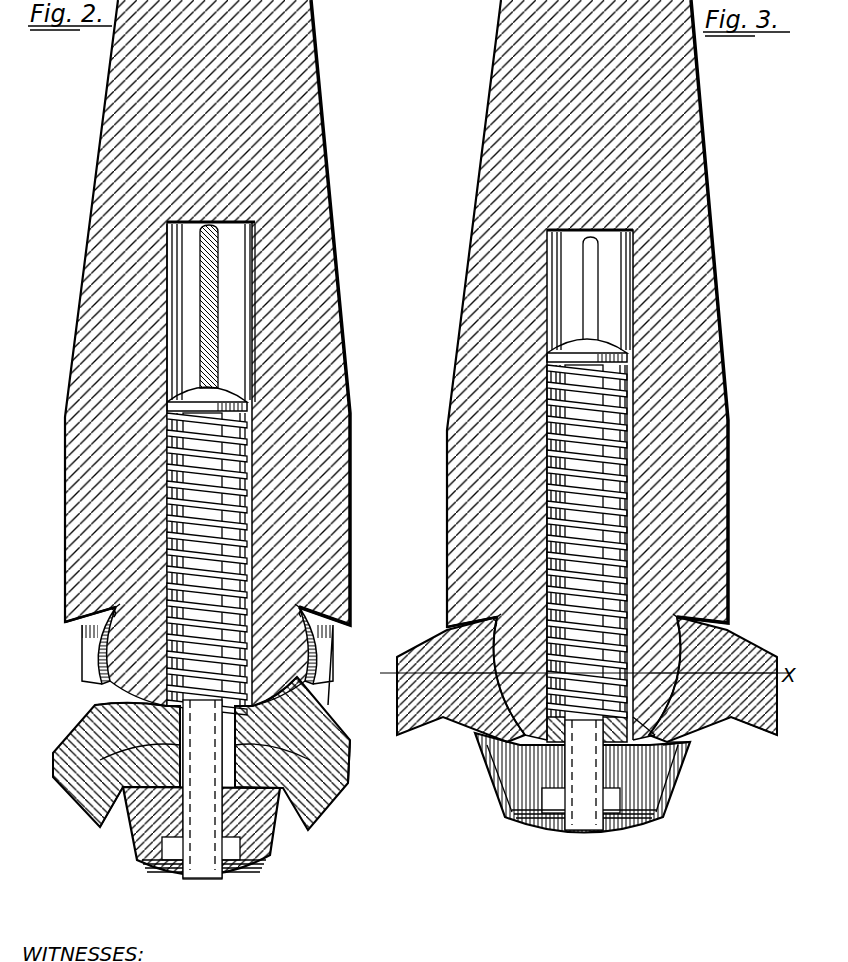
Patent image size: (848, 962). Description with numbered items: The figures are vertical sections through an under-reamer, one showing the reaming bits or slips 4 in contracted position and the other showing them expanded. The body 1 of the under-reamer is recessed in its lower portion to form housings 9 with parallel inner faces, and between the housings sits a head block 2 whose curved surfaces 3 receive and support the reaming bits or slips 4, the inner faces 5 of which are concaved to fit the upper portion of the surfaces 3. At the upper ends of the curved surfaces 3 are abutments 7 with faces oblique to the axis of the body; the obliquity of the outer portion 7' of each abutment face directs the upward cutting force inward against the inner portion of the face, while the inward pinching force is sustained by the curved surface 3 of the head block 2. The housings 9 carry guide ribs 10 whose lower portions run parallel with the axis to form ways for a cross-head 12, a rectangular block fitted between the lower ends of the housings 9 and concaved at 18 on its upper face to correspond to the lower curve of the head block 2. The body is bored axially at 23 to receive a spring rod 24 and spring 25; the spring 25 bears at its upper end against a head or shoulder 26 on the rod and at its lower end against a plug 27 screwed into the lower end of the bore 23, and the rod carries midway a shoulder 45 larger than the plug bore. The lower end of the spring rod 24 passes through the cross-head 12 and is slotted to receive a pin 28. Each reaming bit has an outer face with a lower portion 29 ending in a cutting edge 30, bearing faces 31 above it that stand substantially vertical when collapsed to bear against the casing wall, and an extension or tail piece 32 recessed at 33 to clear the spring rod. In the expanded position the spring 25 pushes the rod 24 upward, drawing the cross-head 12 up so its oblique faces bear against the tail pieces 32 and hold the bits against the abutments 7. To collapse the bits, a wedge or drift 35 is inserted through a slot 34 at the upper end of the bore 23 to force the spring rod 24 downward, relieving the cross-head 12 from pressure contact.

In FIG. 2, the body 1 is at (325, 377).
In FIG. 2, the head block 2 is at (305, 650).
In FIG. 3, the head block 2 is at (728, 620).
In FIG. 2, the curved surfaces 3 is at (93, 650).
In FIG. 2, the reaming bits or slips 4 is at (75, 758).
In FIG. 3, the reaming bits or slips 4 is at (443, 695).
In FIG. 2, the inner faces 5 is at (110, 782).
In FIG. 3, the inner faces 5 is at (608, 676).
In FIG. 2, the abutments 7 is at (198, 619).
In FIG. 3, the abutments 7 is at (597, 605).
In FIG. 2, the outer portion of abutment face 7' is at (209, 582).
In FIG. 3, the outer portion of abutment face 7' is at (595, 593).
In FIG. 3, the housings 9 is at (487, 760).
In FIG. 2, the guide ribs 10 is at (90, 678).
In FIG. 3, the guide ribs 10 is at (668, 745).
In FIG. 2, the cross-head 12 is at (272, 842).
In FIG. 3, the cross-head 12 is at (518, 787).
In FIG. 2, the concaved upper face 18 is at (165, 847).
In FIG. 3, the concaved upper face 18 is at (503, 818).
In FIG. 3, the bore 23 is at (620, 268).
In FIG. 2, the spring rod 24 is at (210, 882).
In FIG. 3, the spring rod 24 is at (600, 423).
In FIG. 2, the spring 25 is at (250, 550).
In FIG. 3, the spring 25 is at (620, 492).
In FIG. 2, the head or shoulder 26 is at (222, 398).
In FIG. 3, the head or shoulder 26 is at (690, 340).
In FIG. 2, the plug 27 is at (274, 697).
In FIG. 3, the plug 27 is at (649, 718).
In FIG. 2, the pin 28 is at (175, 857).
In FIG. 3, the pin 28 is at (610, 815).
In FIG. 3, the lower portion of outer face 29 is at (778, 740).
In FIG. 3, the cutting edge 30 is at (758, 738).
In FIG. 2, the bearing faces 31 is at (350, 772).
In FIG. 3, the bearing faces 31 is at (410, 630).
In FIG. 2, the extension or tail piece 32 is at (128, 812).
In FIG. 3, the extension or tail piece 32 is at (492, 727).
In FIG. 3, the recess 33 is at (673, 757).
In FIG. 2, the slot 34 is at (206, 312).
In FIG. 3, the slot 34 is at (585, 312).
In FIG. 2, the wedge or drift 35 is at (212, 272).
In FIG. 2, the shoulder 45 is at (160, 702).
In FIG. 3, the shoulder 45 is at (575, 625).